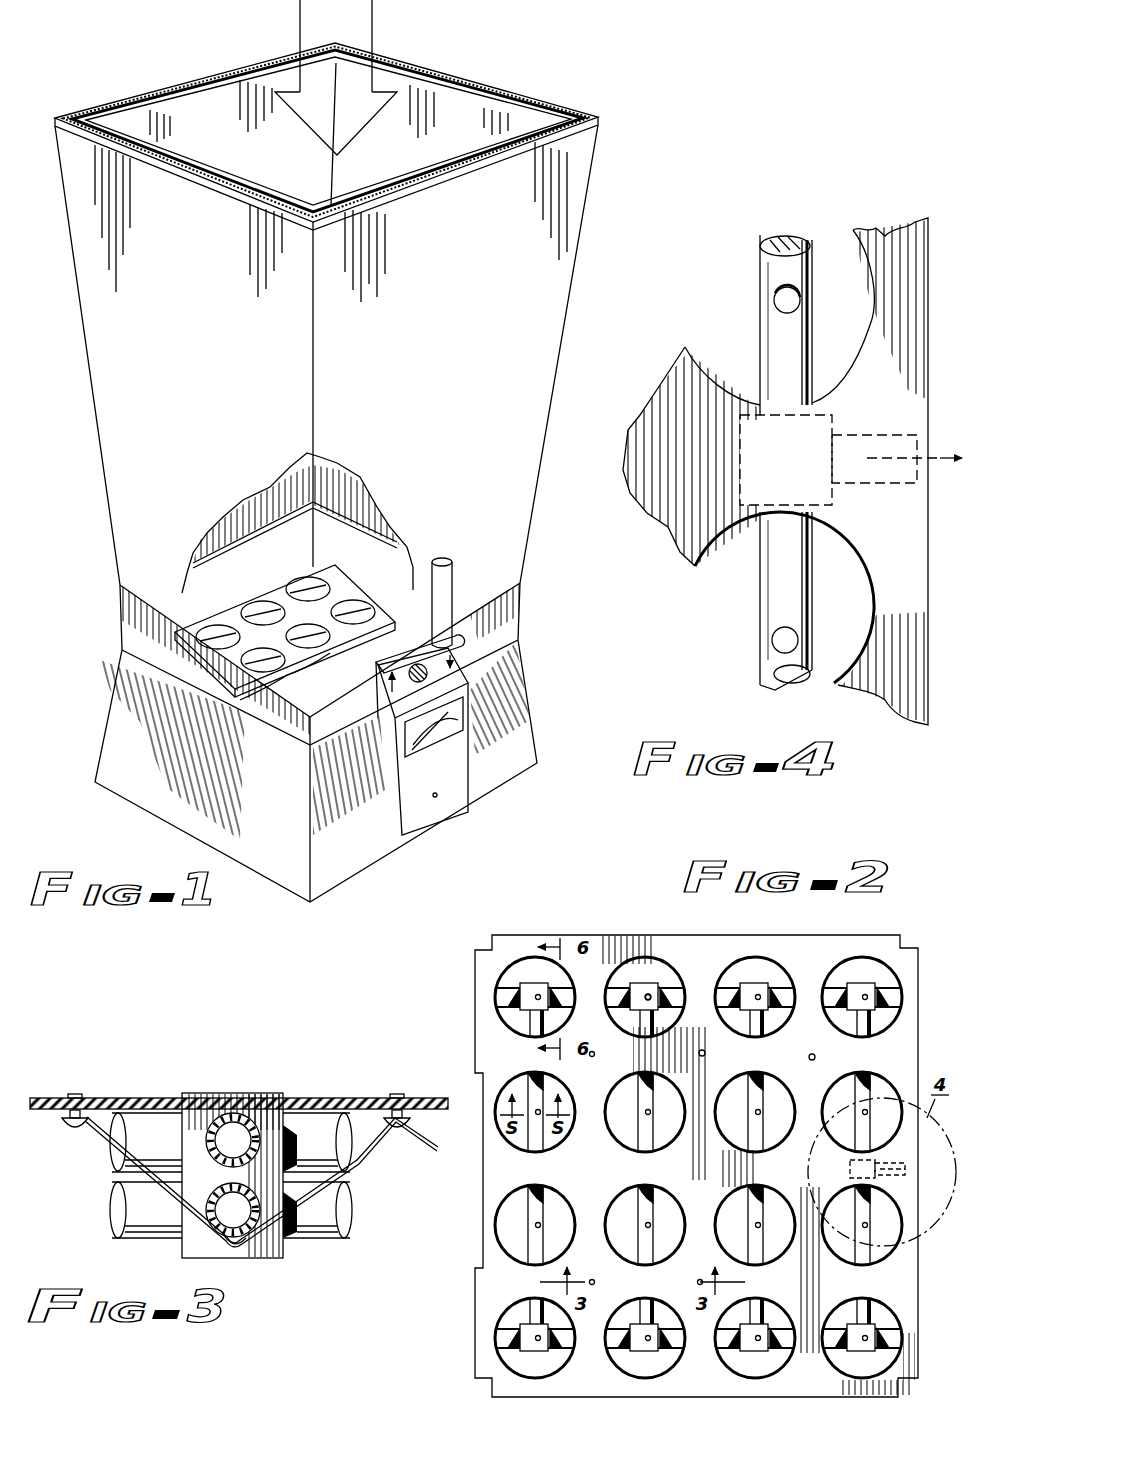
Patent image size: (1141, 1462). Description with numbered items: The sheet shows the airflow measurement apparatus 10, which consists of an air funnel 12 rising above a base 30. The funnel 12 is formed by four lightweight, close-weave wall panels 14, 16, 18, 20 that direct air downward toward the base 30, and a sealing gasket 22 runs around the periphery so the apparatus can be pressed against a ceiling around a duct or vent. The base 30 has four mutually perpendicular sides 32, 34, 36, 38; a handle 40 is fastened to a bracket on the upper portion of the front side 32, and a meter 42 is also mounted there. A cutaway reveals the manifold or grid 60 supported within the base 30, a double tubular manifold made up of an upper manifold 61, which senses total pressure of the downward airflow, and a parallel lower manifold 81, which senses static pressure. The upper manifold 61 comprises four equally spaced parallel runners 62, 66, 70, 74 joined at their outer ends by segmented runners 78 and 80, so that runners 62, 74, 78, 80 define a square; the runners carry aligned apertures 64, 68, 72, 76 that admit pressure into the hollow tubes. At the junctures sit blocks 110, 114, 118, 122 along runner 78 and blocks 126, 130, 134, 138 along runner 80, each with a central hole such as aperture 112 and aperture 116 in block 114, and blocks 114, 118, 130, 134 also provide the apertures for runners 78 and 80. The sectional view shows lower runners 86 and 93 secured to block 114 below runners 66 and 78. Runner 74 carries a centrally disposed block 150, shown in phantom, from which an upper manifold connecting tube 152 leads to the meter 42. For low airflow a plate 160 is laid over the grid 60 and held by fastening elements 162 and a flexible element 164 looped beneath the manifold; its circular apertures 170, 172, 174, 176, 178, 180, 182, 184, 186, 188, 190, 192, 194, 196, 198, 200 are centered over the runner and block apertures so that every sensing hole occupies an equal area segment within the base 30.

In FIG. 1, the airflow measurement apparatus 10 is at (603, 176).
In FIG. 1, the air funnel 12 is at (596, 248).
In FIG. 1, the wall panel 14 is at (560, 316).
In FIG. 1, the wall panel 16 is at (120, 470).
In FIG. 1, the wall panel 18 is at (187, 115).
In FIG. 1, the wall panel 20 is at (484, 103).
In FIG. 1, the sealing gasket 22 is at (576, 104).
In FIG. 1, the base 30 is at (538, 702).
In FIG. 1, the side 32 is at (527, 738).
In FIG. 1, the side 34 is at (110, 730).
In FIG. 1, the side 36 is at (291, 558).
In FIG. 1, the side 38 is at (344, 558).
In FIG. 1, the handle 40 is at (455, 578).
In FIG. 1, the meter 42 is at (457, 790).
In FIG. 1, the manifold or grid 60 is at (352, 586).
In FIG. 2, the manifold or grid 60 is at (515, 1000).
In FIG. 3, the manifold or grid 60 is at (318, 1250).
In FIG. 3, the upper manifold 61 is at (350, 1157).
In FIG. 2, the manifold runner 62 is at (535, 1238).
In FIG. 2, the apertures 64 is at (535, 1153).
In FIG. 2, the manifold runner 66 is at (647, 1200).
In FIG. 3, the manifold runner 66 is at (240, 1115).
In FIG. 2, the apertures 68 is at (652, 1225).
In FIG. 2, the manifold runner 70 is at (753, 1202).
In FIG. 2, the apertures 72 is at (762, 1223).
In FIG. 4, the manifold runner 74 is at (775, 340).
In FIG. 2, the manifold runner 74 is at (863, 1315).
In FIG. 4, the apertures 76 is at (774, 300).
In FIG. 2, the apertures 76 is at (845, 1178).
In FIG. 2, the manifold runner 78 is at (673, 995).
In FIG. 3, the manifold runner 78 is at (152, 1122).
In FIG. 2, the manifold runner 80 is at (732, 1338).
In FIG. 3, the lower manifold 81 is at (127, 1243).
In FIG. 3, the manifold runner 86 is at (238, 1250).
In FIG. 3, the manifold runner 93 is at (357, 1218).
In FIG. 2, the block 110 is at (518, 998).
In FIG. 2, the aperture 112 is at (527, 993).
In FIG. 2, the block 114 is at (638, 985).
In FIG. 3, the block 114 is at (193, 1250).
In FIG. 2, the aperture 116 is at (648, 993).
In FIG. 2, the block 118 is at (753, 987).
In FIG. 2, the block 122 is at (863, 992).
In FIG. 2, the block 126 is at (530, 1333).
In FIG. 2, the block 130 is at (642, 1347).
In FIG. 2, the block 134 is at (750, 1353).
In FIG. 2, the block 138 is at (852, 1352).
In FIG. 4, the block 150 is at (752, 412).
In FIG. 4, the upper manifold connecting tube 152 is at (852, 440).
In FIG. 4, the plate 160 is at (668, 527).
In FIG. 2, the plate 160 is at (485, 1040).
In FIG. 3, the plate 160 is at (340, 1100).
In FIG. 2, the fastening elements 162 is at (702, 1050).
In FIG. 3, the fastening elements 162 is at (78, 1094).
In FIG. 3, the flexible element 164 is at (95, 1127).
In FIG. 2, the aperture 170 is at (527, 962).
In FIG. 2, the aperture 172 is at (520, 1090).
In FIG. 2, the aperture 174 is at (508, 1208).
In FIG. 2, the aperture 176 is at (530, 1373).
In FIG. 2, the aperture 178 is at (620, 977).
In FIG. 2, the aperture 180 is at (613, 1097).
In FIG. 2, the aperture 182 is at (620, 1243).
In FIG. 2, the aperture 184 is at (655, 1373).
In FIG. 2, the aperture 186 is at (782, 973).
In FIG. 2, the aperture 188 is at (777, 1087).
In FIG. 2, the aperture 190 is at (775, 1257).
In FIG. 2, the aperture 192 is at (763, 1372).
In FIG. 2, the aperture 194 is at (897, 1005).
In FIG. 4, the aperture 196 is at (850, 240).
In FIG. 2, the aperture 196 is at (883, 1080).
In FIG. 4, the aperture 198 is at (703, 553).
In FIG. 2, the aperture 198 is at (887, 1255).
In FIG. 2, the aperture 200 is at (882, 1370).